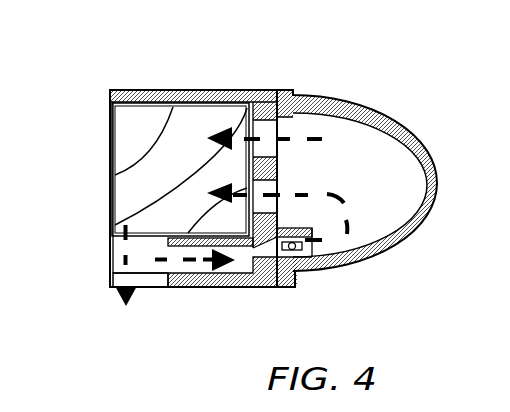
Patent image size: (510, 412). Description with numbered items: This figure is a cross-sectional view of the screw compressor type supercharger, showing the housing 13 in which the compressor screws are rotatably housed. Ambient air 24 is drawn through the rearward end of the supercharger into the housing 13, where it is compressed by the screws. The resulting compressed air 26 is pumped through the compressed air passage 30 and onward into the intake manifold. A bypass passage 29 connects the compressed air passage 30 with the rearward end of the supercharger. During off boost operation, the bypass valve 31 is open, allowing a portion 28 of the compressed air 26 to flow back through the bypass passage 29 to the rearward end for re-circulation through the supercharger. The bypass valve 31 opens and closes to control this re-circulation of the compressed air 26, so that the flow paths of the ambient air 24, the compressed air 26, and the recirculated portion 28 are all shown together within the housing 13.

The housing 13 is at (200, 90).
The ambient air 24 is at (317, 137).
The compressed air 26 is at (122, 262).
The portion of the compressed air 28 is at (182, 280).
The bypass passage 29 is at (200, 262).
The compressed air passage 30 is at (153, 277).
The bypass valve 31 is at (297, 252).